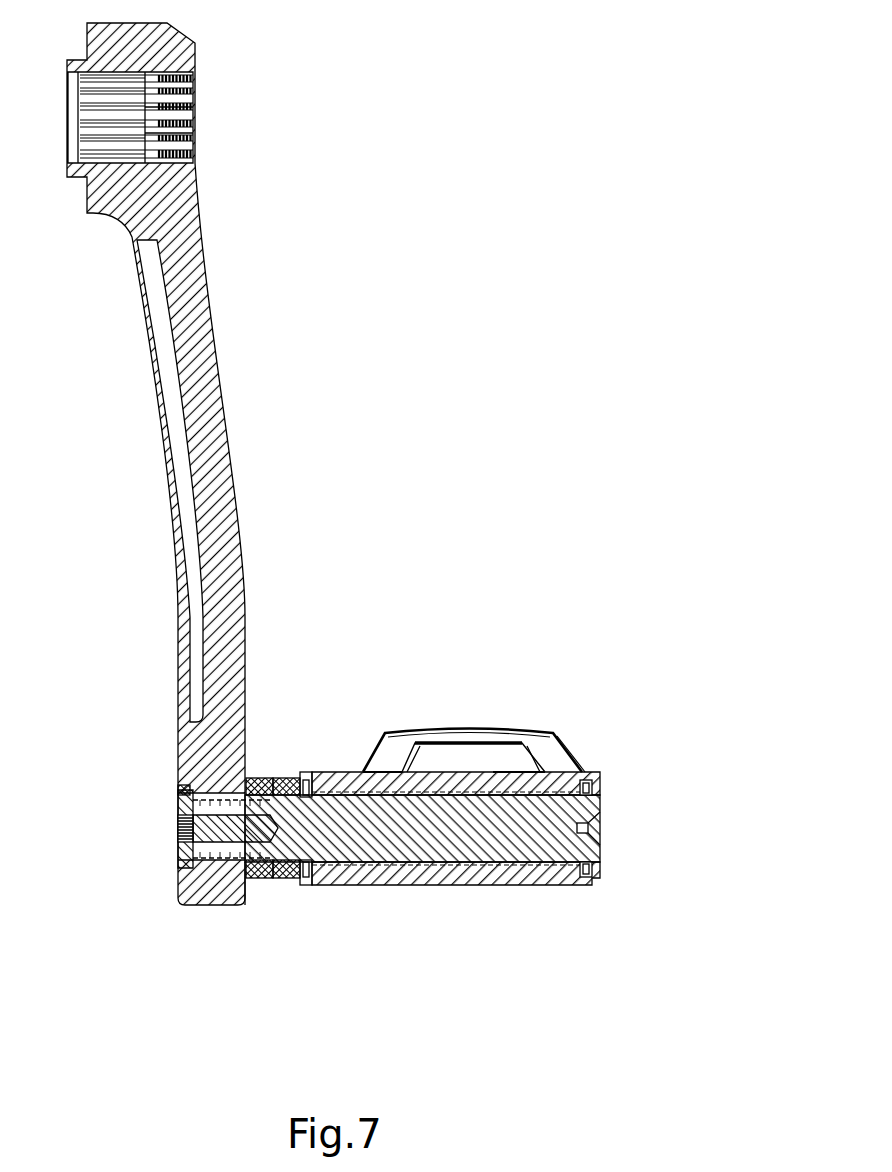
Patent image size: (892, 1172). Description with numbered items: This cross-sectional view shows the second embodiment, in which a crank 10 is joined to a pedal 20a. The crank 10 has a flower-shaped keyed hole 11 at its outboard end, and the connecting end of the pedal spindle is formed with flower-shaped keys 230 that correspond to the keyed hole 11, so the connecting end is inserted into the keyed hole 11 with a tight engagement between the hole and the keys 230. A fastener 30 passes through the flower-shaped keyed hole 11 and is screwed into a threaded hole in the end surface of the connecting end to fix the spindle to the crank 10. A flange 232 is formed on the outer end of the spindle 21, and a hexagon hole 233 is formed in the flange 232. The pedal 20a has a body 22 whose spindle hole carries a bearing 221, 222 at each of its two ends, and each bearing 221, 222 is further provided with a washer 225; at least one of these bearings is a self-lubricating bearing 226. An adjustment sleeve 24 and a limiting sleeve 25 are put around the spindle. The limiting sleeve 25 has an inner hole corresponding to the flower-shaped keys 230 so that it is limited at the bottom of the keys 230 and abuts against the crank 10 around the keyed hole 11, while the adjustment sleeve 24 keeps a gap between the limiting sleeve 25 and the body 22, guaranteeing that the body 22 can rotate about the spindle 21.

The crank 10 is at (237, 413).
The flower-shaped keyed hole 11 is at (176, 810).
The fastener 30 is at (178, 828).
The flower-shaped keys 230 is at (258, 880).
The limiting sleeve 25 is at (257, 778).
The adjustment sleeve 24 is at (282, 778).
The washer 225 is at (303, 880).
The spindle 21 is at (425, 847).
The bearing 221 is at (330, 772).
The flange 232 is at (590, 880).
The hexagon hole 233 is at (590, 828).
The pedal 20a is at (448, 722).
The body 22 is at (540, 742).
The bearing 222 is at (553, 770).
The self-lubricating bearing 226 is at (402, 772).